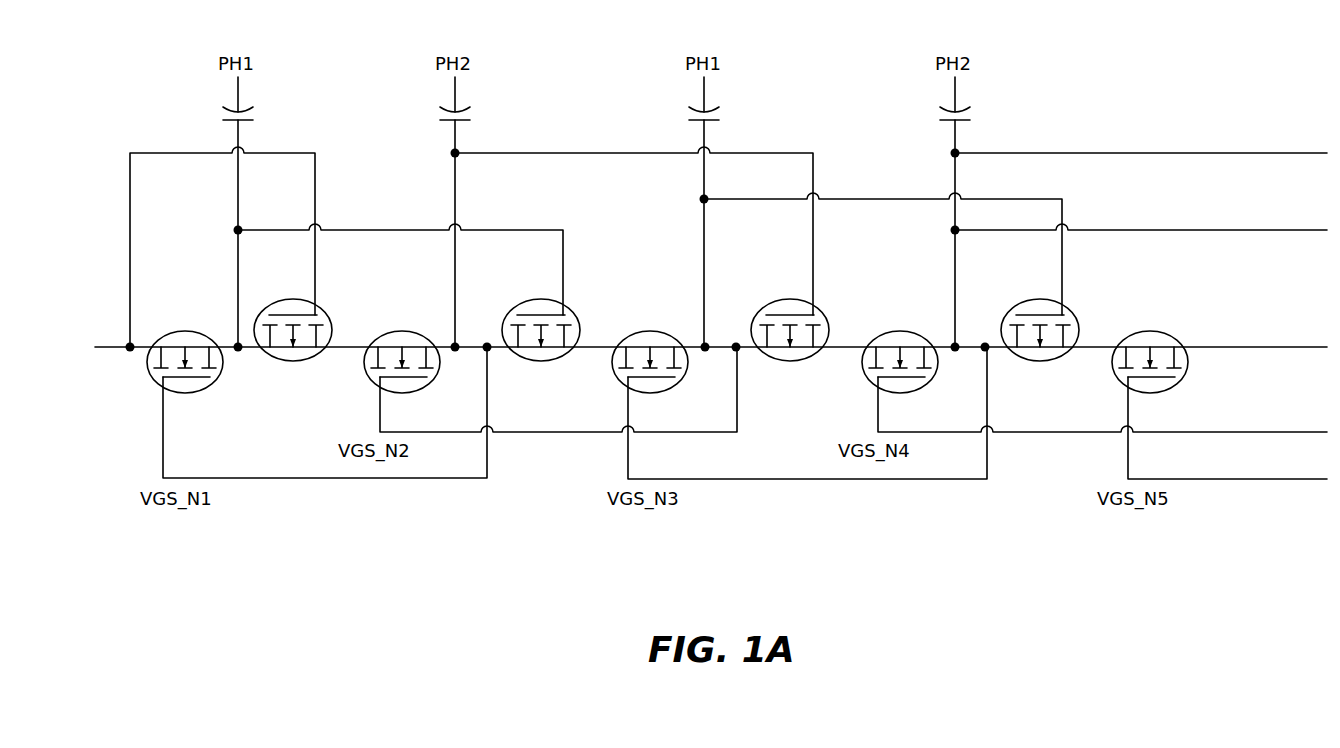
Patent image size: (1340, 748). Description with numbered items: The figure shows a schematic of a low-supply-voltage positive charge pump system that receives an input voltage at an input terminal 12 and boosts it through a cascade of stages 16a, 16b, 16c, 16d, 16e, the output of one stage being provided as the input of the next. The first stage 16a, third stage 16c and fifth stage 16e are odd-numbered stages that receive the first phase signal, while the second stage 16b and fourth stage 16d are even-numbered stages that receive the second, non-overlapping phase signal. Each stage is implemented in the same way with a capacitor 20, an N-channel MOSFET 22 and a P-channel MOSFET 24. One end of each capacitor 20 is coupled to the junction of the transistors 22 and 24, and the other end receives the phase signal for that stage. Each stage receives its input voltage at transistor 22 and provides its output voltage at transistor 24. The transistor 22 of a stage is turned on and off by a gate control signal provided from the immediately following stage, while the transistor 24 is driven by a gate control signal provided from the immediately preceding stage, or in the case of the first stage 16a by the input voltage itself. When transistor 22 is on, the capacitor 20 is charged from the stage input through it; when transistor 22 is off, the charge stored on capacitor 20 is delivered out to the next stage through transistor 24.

The input terminal 12 is at (115, 342).
The first charge pump stage 16a is at (183, 112).
The second charge pump stage 16b is at (368, 112).
The third charge pump stage 16c is at (617, 112).
The fourth charge pump stage 16d is at (867, 112).
The fifth charge pump stage 16e is at (1115, 112).
The capacitor 20 is at (253, 122).
The N-channel MOSFET 22 is at (177, 330).
The P-channel MOSFET 24 is at (302, 300).